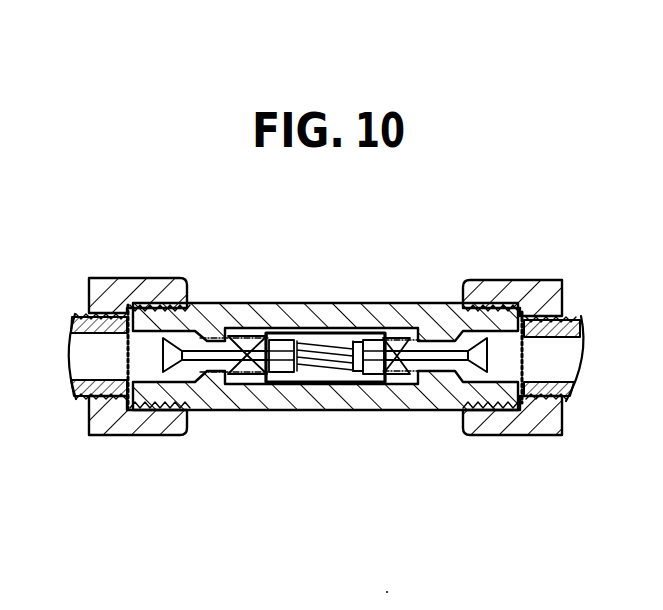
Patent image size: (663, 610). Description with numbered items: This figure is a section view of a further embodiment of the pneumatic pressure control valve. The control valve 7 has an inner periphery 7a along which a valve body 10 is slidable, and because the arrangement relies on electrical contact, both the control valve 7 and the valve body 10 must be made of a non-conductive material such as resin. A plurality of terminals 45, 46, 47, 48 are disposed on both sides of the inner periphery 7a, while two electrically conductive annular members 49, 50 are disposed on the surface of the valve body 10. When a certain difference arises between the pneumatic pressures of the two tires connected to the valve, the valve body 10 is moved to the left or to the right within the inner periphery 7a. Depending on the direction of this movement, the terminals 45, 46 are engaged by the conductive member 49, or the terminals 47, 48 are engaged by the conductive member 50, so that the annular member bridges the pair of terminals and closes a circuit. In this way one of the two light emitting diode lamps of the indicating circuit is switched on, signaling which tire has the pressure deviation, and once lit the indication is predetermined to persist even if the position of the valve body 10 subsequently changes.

The control valve 7 is at (212, 417).
The inner periphery 7a is at (315, 303).
The valve body 10 is at (387, 303).
The terminal 45 is at (365, 303).
The terminal 46 is at (373, 412).
The terminal 47 is at (282, 303).
The terminal 48 is at (278, 412).
The electrically conductive annular member 49 is at (342, 412).
The electrically conductive annular member 50 is at (307, 412).